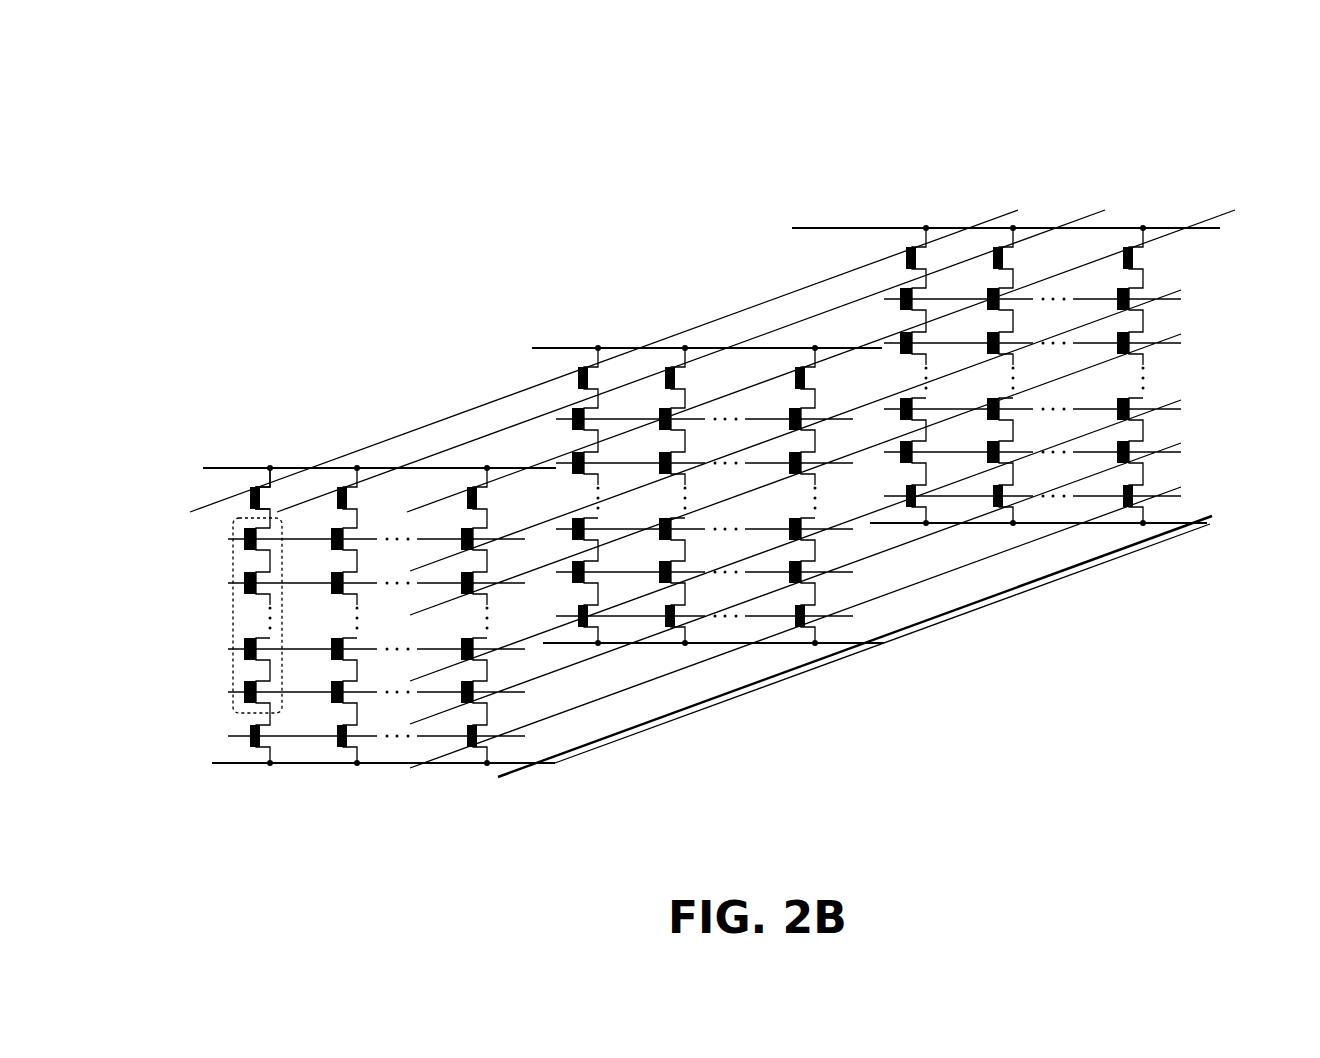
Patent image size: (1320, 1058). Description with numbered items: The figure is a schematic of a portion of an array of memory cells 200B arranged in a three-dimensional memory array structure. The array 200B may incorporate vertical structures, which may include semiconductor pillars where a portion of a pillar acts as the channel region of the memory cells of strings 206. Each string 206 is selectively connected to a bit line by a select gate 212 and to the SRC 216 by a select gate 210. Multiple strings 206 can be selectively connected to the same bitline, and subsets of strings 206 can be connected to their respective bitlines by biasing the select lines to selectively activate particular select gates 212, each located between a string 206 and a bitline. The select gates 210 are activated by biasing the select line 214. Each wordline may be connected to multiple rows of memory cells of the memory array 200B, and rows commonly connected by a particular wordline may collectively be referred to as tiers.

The array of memory cells 200B is at (116, 86).
The string 206 is at (228, 622).
The select gate 210 is at (218, 768).
The select gate 212 is at (252, 462).
The select line 214 is at (1068, 575).
The SRC 216 is at (885, 647).